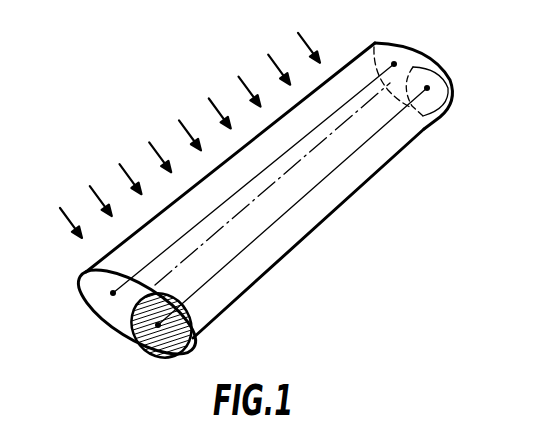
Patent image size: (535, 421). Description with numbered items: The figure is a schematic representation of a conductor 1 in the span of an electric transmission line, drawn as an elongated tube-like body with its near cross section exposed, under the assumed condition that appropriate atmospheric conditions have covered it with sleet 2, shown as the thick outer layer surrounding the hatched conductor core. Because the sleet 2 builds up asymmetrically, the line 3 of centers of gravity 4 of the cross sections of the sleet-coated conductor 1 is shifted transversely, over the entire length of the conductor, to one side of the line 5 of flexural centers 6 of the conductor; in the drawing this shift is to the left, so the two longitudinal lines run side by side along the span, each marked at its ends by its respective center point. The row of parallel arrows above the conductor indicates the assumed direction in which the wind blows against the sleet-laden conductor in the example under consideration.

The conductor 1 is at (193, 336).
The sleet 2 is at (108, 309).
The line of centers of gravity 3 is at (368, 82).
The centers of gravity 4 is at (113, 294).
The line of flexural centers 5 is at (311, 194).
The flexural centers 6 is at (133, 336).